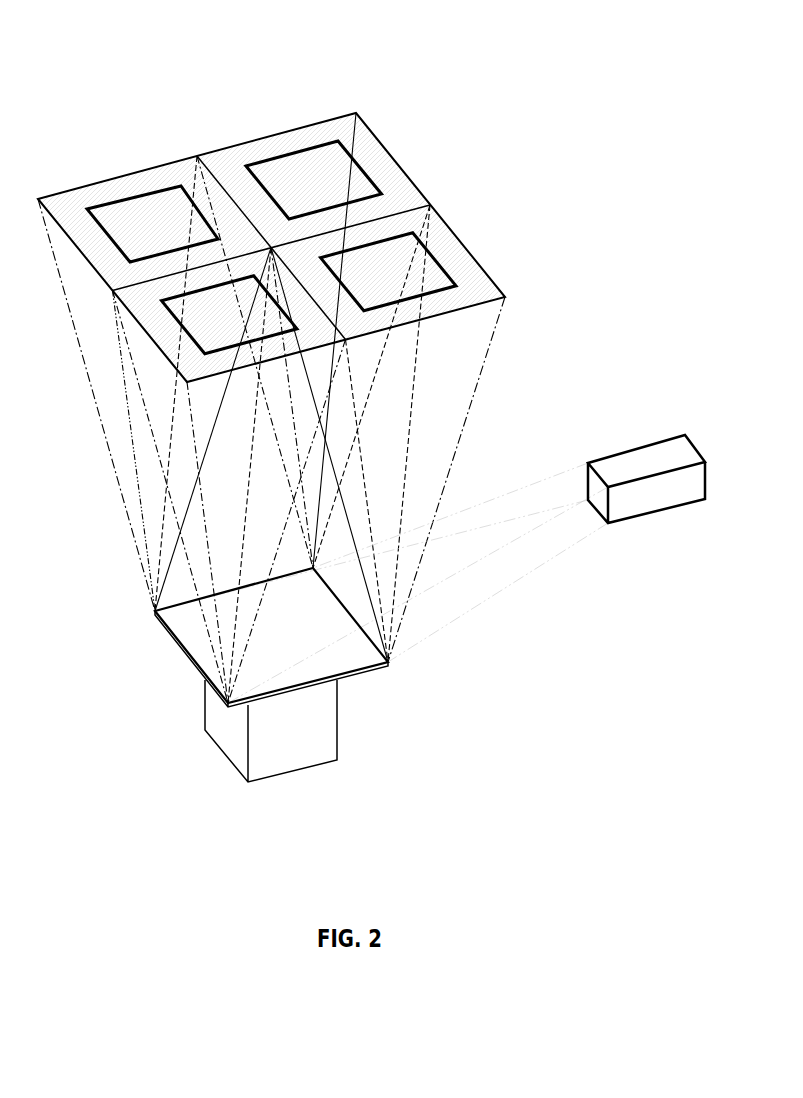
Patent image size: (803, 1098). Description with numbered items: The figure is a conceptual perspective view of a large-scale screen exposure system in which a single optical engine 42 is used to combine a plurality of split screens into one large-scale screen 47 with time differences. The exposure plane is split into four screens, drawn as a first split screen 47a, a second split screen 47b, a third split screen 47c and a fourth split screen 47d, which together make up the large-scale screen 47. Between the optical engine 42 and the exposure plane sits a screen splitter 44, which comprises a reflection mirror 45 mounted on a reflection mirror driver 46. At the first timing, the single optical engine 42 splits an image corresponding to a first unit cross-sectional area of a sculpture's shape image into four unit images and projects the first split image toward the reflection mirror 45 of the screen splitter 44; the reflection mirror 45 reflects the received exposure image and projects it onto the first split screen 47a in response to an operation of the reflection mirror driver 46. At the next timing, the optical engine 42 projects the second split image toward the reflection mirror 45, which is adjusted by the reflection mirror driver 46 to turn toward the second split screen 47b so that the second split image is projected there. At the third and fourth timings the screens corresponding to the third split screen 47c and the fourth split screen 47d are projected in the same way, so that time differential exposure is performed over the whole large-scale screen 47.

The large-scale screen 47 is at (398, 43).
The first split screen 47a is at (160, 182).
The second split screen 47b is at (318, 136).
The third split screen 47c is at (243, 268).
The fourth split screen 47d is at (393, 210).
The single optical engine 42 is at (660, 510).
The screen splitter 44 is at (224, 675).
The reflection mirror 45 is at (168, 635).
The reflection mirror driver 46 is at (205, 713).